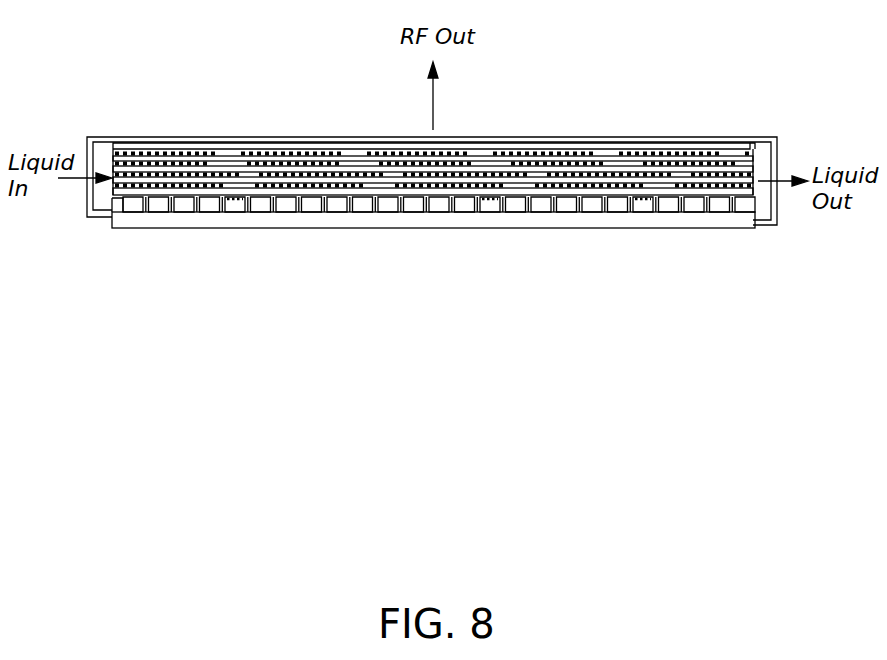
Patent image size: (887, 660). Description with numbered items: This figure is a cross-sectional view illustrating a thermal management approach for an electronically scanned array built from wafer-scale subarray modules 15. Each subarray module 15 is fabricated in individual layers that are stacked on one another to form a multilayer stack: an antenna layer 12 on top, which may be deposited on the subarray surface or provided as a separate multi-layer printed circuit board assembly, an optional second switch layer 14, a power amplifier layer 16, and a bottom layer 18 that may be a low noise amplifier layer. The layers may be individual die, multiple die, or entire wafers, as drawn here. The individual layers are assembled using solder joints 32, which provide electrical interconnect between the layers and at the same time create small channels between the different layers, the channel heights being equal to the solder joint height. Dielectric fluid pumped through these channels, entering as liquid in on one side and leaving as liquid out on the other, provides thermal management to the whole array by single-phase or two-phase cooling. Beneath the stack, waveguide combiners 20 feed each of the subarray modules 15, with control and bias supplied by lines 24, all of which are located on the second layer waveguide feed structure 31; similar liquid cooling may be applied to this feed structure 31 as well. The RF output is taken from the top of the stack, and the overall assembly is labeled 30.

The antenna layer 12 is at (757, 141).
The switch 2 layer 14 is at (757, 166).
The wafer-scale subarray module 15 is at (210, 137).
The power amplifier layer 16 is at (758, 186).
The bottom layer 18 is at (751, 197).
The waveguide combiners 20 is at (139, 200).
The lines 24 is at (242, 202).
The electron tube assembly 30 is at (206, 466).
The second layer waveguide feed structure 31 is at (268, 215).
The solder joints 32 is at (138, 163).